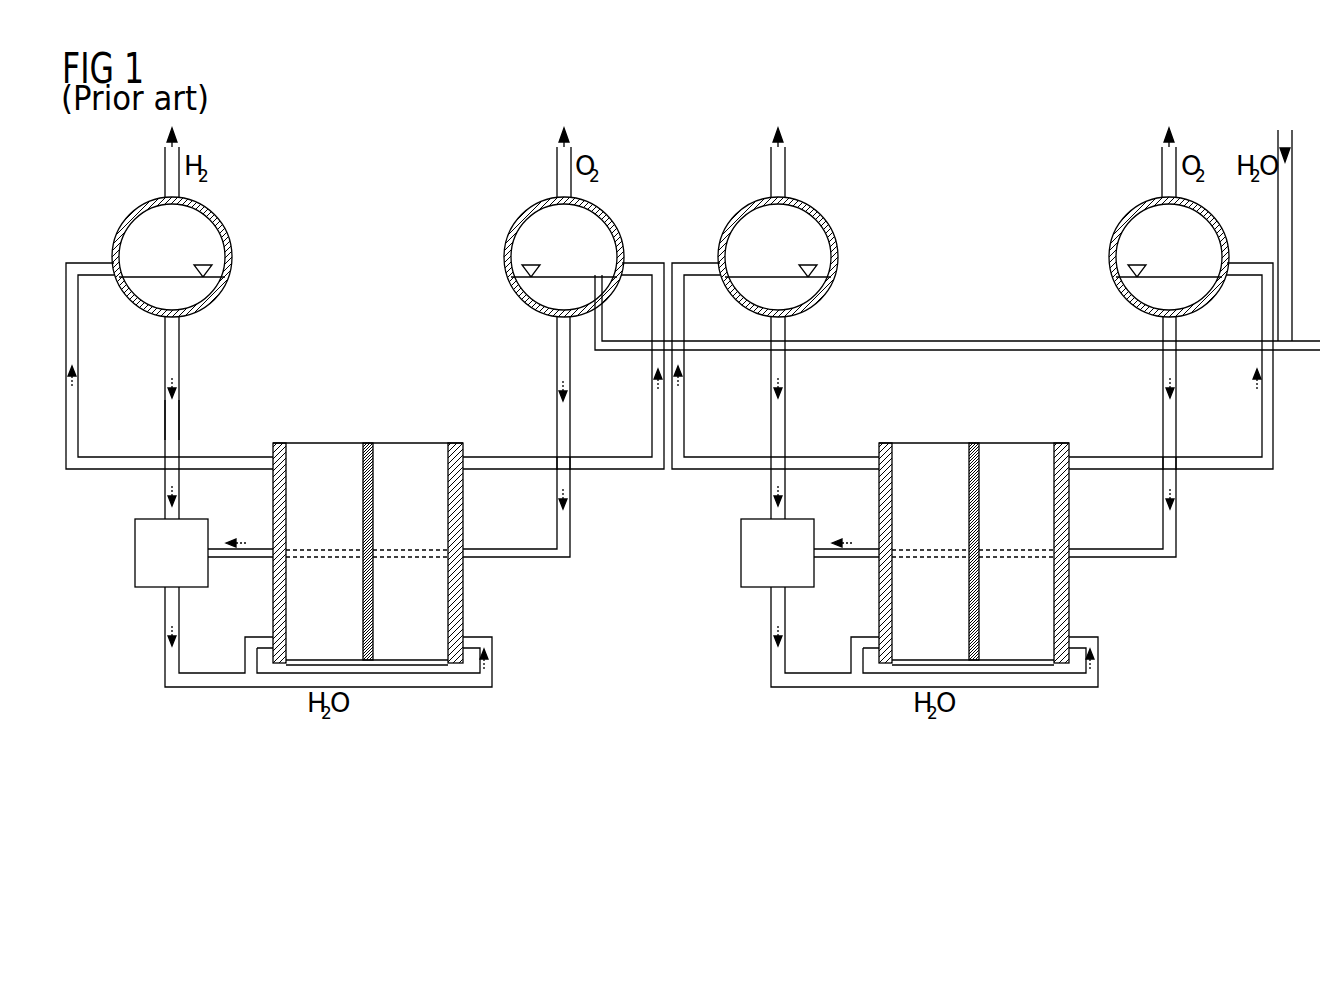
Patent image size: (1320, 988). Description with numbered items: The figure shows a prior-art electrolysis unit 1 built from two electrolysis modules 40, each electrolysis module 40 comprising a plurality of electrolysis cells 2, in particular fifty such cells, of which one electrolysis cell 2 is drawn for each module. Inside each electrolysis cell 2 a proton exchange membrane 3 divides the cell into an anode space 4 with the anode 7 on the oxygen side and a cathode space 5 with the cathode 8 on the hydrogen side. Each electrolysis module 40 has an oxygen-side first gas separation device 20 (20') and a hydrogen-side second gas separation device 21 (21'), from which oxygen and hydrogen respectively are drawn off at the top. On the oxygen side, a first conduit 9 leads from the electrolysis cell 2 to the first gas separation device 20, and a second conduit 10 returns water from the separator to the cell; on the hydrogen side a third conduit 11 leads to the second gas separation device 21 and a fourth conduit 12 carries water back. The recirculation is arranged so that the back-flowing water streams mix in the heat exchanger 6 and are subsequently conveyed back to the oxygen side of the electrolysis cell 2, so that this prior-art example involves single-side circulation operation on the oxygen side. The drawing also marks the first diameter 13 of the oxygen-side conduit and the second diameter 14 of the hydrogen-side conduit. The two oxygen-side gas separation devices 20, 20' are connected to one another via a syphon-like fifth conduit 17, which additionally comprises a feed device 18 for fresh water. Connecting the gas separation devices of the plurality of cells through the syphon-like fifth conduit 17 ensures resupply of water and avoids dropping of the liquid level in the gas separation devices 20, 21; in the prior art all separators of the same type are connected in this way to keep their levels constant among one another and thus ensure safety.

The electrolysis unit 1 is at (1165, 749).
The electrolysis cell 2 is at (403, 443).
The proton exchange membrane 3 is at (365, 443).
The anode space 4 is at (418, 511).
The cathode space 5 is at (330, 511).
The heat exchanger 6 is at (179, 568).
The anode 7 is at (453, 443).
The cathode 8 is at (277, 443).
The first conduit 9 is at (639, 470).
The second conduit 10 is at (571, 530).
The third conduit 11 is at (82, 337).
The fourth conduit 12 is at (182, 337).
The first diameter 13 is at (538, 418).
The second diameter 14 is at (142, 418).
The fifth conduit 17 is at (977, 341).
The feed device for water 18 is at (1278, 208).
The first gas separation device 20 is at (531, 222).
The first gas separation device 20' is at (1134, 222).
The second gas separation device 21 is at (203, 222).
The second gas separation device 21' is at (812, 222).
The electrolysis module 40 is at (463, 597).